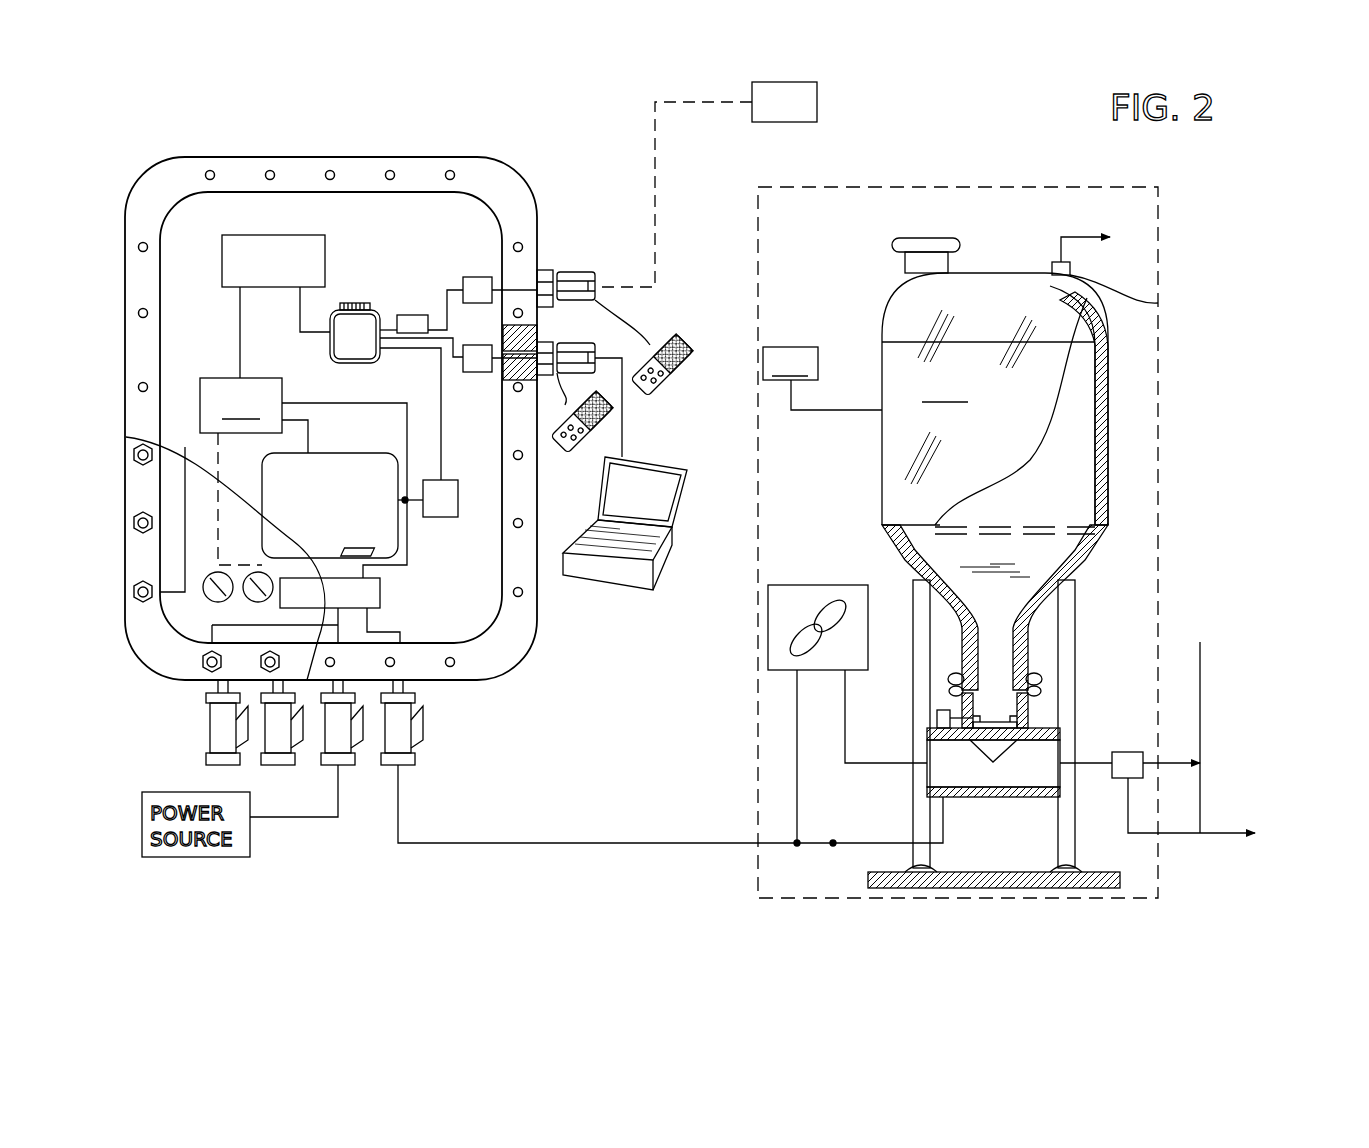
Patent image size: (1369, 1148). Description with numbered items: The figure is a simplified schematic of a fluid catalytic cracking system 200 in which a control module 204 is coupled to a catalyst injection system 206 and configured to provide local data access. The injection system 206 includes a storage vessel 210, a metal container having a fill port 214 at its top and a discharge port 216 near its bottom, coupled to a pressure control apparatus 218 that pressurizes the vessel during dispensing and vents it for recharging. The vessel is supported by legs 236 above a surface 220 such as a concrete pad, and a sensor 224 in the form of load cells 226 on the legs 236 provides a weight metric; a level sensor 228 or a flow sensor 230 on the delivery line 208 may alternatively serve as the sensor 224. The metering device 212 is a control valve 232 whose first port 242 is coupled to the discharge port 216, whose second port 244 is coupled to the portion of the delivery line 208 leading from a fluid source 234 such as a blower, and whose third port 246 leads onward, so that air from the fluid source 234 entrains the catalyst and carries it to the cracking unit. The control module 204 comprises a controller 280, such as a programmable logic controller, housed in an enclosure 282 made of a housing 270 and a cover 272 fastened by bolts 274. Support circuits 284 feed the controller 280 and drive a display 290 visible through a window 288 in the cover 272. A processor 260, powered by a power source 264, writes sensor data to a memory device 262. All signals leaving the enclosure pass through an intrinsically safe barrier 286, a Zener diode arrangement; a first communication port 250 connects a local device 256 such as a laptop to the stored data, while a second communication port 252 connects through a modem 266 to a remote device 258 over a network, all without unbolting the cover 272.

The fluid catalytic cracking system 200 is at (296, 110).
The control module 204 is at (120, 407).
The injection system 206 is at (975, 186).
The delivery line 208 is at (1093, 770).
The storage vessel 210 is at (995, 425).
The metering device 212 is at (1088, 716).
The fill port 214 is at (915, 238).
The discharge port 216 is at (1040, 665).
The pressure control apparatus 218 is at (822, 378).
The surface 220 is at (870, 868).
The sensor 224 is at (1050, 260).
The load cells 226 is at (945, 888).
The level sensor 228 is at (1158, 303).
The flow sensor 230 is at (1130, 752).
The control valve 232 is at (1000, 799).
The fluid source 234 is at (808, 585).
The legs 236 is at (1075, 606).
The first port 242 is at (1046, 698).
The second port 244 is at (945, 799).
The third port 246 is at (1047, 727).
The first communication port 250 is at (602, 335).
The second communication port 252 is at (546, 268).
The local device 256 is at (646, 457).
The remote device 258 is at (706, 184).
The processor 260 is at (396, 395).
The memory device 262 is at (354, 303).
The power source 264 is at (448, 517).
The modem 266 is at (412, 315).
The housing 270 is at (143, 229).
The cover 272 is at (143, 485).
The bolts 274 is at (137, 524).
The controller 280 is at (328, 245).
The enclosure 282 is at (378, 155).
The support circuits 284 is at (303, 478).
The intrinsically safe barrier 286 is at (476, 277).
The window 288 is at (265, 527).
The display 290 is at (325, 453).